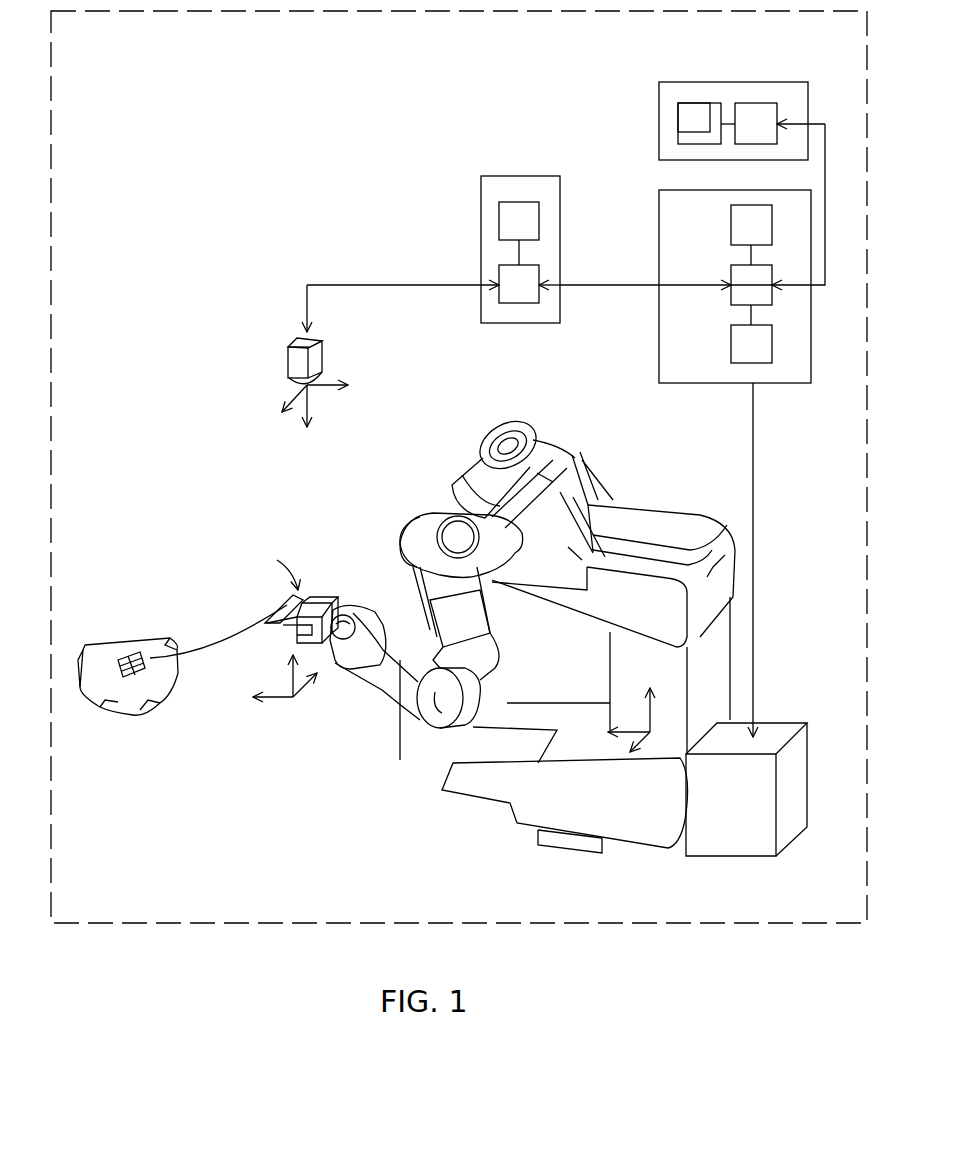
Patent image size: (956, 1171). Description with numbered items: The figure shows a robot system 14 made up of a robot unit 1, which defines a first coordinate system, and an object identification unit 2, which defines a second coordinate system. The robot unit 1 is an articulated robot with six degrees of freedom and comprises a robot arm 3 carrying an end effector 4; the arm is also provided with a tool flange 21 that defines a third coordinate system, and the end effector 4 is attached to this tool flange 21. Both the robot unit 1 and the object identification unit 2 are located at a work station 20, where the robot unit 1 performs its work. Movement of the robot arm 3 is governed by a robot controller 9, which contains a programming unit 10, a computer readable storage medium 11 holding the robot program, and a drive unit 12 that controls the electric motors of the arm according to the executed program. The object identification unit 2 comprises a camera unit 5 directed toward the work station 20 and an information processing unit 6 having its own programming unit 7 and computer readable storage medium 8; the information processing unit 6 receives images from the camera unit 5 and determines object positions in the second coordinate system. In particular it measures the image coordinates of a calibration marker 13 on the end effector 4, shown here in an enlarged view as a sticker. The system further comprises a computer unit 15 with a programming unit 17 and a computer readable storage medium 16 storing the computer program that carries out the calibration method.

The robot unit 1 is at (584, 432).
The object identification unit 2 is at (291, 218).
The robot arm 3 is at (405, 672).
The end effector 4 is at (303, 602).
The camera unit 5 is at (313, 355).
The information processing unit 6 is at (547, 207).
The programming unit 7 is at (508, 283).
The computer readable storage medium 8 is at (508, 218).
The robot controller 9 is at (670, 203).
The programming unit 10 is at (758, 294).
The computer readable storage medium 11 is at (742, 218).
The drive unit 12 is at (758, 350).
The calibration marker 13 is at (135, 655).
The robot system 14 is at (50, 387).
The computer unit 15 is at (783, 92).
The computer readable storage medium 16 is at (720, 110).
The programming unit 17 is at (755, 113).
The work station 20 is at (215, 800).
The tool flange 21 is at (337, 607).